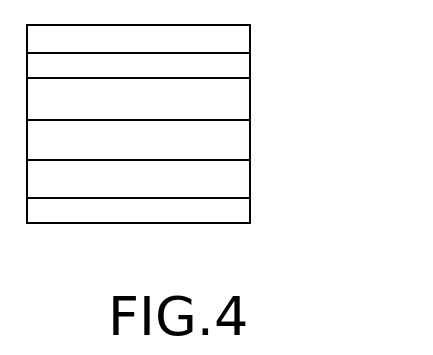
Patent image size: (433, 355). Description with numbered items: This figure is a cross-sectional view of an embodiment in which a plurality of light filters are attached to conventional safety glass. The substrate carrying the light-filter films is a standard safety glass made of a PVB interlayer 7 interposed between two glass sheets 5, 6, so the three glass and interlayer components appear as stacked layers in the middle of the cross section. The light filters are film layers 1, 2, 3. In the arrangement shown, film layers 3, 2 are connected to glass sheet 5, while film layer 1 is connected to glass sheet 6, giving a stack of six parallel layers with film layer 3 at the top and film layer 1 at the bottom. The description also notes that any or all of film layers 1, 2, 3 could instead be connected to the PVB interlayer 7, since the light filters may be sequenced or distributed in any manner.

The film layer 1 is at (244, 213).
The film layer 2 is at (244, 69).
The film layer 3 is at (244, 38).
The glass sheet 5 is at (244, 100).
The glass sheet 6 is at (244, 181).
The PVB interlayer 7 is at (244, 149).